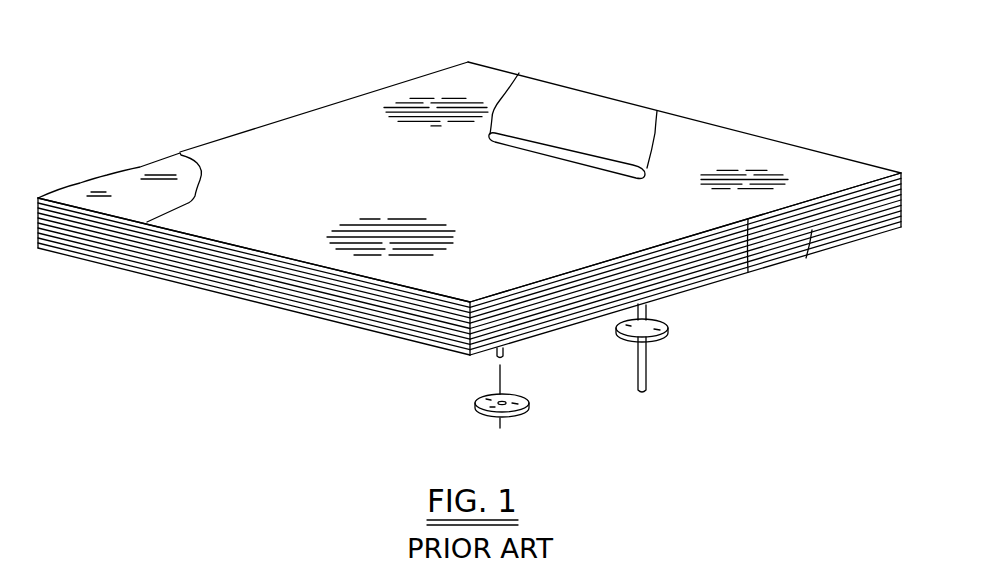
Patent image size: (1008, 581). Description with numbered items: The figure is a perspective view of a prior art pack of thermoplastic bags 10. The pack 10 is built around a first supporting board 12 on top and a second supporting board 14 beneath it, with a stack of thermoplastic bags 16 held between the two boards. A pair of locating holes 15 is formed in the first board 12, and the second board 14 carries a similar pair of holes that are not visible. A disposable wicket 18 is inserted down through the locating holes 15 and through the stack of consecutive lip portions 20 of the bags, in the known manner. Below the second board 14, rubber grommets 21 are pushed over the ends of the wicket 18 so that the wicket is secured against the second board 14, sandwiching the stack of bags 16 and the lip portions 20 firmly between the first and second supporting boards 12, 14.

The pack of thermoplastic bags 10 is at (606, 26).
The first supporting board 12 is at (772, 154).
The second supporting board 14 is at (708, 287).
The locating holes 15 is at (519, 73).
The stack of thermoplastic bags 16 is at (543, 310).
The disposable wicket 18 is at (523, 135).
The lip portions 20 is at (806, 258).
The rubber grommets 21 is at (526, 402).